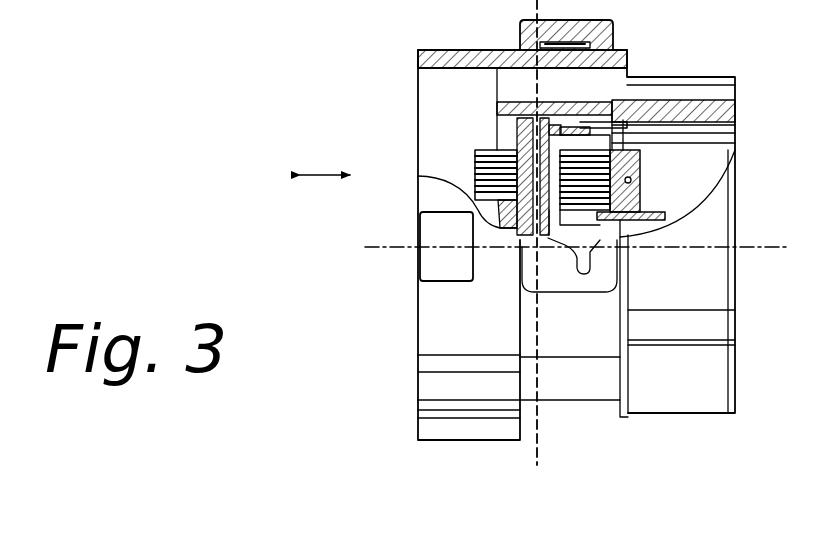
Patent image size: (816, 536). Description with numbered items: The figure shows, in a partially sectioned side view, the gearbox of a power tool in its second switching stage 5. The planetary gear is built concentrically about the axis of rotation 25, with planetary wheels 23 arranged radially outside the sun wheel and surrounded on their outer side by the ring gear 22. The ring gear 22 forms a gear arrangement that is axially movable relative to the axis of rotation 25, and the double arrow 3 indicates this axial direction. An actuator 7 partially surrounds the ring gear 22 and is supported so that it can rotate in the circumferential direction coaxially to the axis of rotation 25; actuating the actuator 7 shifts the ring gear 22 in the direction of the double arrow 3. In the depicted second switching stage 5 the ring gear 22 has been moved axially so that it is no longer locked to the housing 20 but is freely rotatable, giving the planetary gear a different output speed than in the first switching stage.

The double arrow 3 is at (325, 175).
The second switching stage 5 is at (594, 86).
The actuator 7 is at (528, 33).
The housing 20 is at (692, 112).
The ring gear 22 is at (511, 117).
The planetary wheels 23 is at (641, 176).
The axis of rotation 25 is at (392, 245).